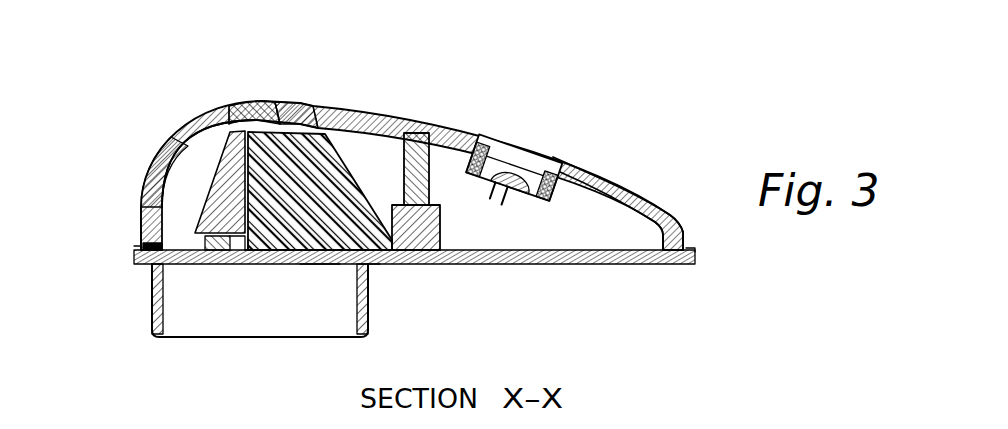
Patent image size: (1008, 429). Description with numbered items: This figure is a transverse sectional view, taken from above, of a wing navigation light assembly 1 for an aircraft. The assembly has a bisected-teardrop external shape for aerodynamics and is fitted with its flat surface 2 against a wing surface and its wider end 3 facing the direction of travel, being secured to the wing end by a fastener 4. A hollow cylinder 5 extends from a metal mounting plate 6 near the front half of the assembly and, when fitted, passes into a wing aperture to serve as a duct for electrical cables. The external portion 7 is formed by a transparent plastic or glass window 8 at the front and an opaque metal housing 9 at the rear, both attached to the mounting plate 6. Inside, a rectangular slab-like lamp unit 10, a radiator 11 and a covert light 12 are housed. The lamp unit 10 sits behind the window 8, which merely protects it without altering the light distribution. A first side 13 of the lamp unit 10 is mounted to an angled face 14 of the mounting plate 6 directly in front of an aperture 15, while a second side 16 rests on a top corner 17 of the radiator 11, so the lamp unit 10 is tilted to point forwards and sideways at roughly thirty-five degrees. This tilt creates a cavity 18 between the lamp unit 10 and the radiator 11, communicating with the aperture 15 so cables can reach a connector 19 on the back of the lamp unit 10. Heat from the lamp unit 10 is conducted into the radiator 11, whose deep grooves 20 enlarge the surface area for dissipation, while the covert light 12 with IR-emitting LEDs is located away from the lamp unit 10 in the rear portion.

The wing navigation light assembly 1 is at (270, 88).
The flat surface 2 is at (538, 264).
The wider end 3 is at (170, 118).
The fastener 4 is at (421, 122).
The hollow cylinder 5 is at (150, 306).
The metal mounting plate 6 is at (383, 265).
The external portion 7 is at (136, 206).
The window 8 is at (150, 166).
The metal housing 9 is at (612, 174).
The lamp unit 10 is at (198, 108).
The radiator 11 is at (305, 264).
The covert light 12 is at (518, 163).
The first side 13 is at (196, 258).
The angled face 14 is at (233, 265).
The aperture 15 is at (245, 264).
The second side 16 is at (236, 102).
The top corner 17 is at (270, 106).
The cavity 18 is at (242, 229).
The connector 19 is at (222, 166).
The deep grooves 20 is at (333, 168).